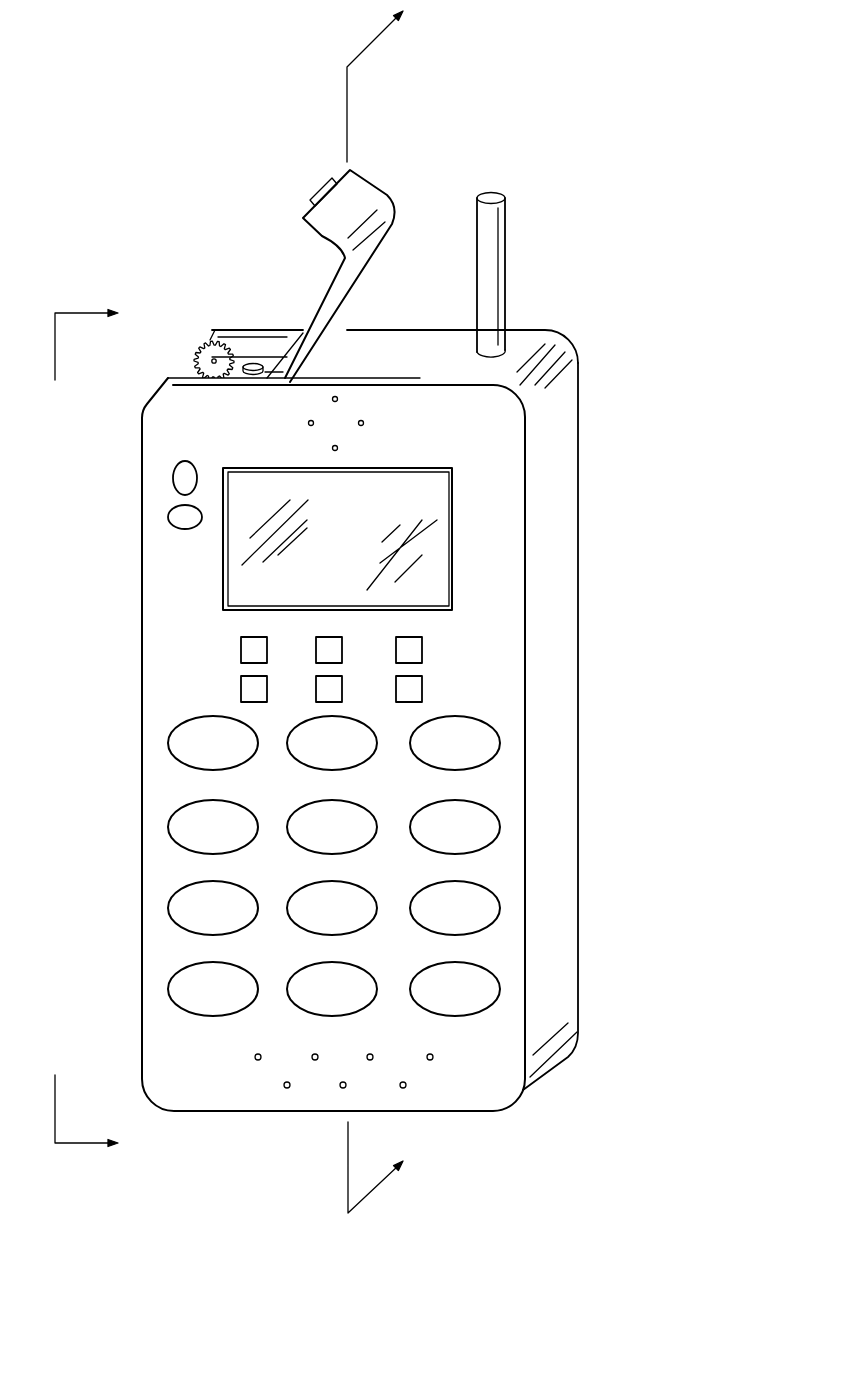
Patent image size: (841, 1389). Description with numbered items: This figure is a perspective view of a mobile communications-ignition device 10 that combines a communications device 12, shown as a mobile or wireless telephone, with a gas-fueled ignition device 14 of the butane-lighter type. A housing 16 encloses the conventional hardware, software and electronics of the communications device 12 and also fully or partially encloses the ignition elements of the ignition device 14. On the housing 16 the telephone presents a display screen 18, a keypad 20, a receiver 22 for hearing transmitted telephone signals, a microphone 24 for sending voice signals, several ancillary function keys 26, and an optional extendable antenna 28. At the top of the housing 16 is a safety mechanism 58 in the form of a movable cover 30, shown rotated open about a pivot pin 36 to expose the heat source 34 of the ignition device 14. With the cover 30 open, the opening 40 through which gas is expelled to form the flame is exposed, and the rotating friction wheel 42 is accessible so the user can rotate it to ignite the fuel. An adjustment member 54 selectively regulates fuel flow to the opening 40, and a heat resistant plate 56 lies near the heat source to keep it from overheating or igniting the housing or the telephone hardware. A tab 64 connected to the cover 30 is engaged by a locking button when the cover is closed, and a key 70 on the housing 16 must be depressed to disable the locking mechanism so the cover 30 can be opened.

The mobile communications-ignition device 10 is at (615, 310).
The communications device 12 is at (578, 700).
The ignition device 14 is at (188, 336).
The housing 16 is at (560, 507).
The display screen 18 is at (430, 477).
The keypad 20 is at (495, 786).
The receiver 22 is at (370, 423).
The microphone 24 is at (317, 1092).
The ancillary function keys 26 is at (248, 688).
The antenna 28 is at (492, 262).
The movable cover 30 is at (373, 193).
The heat source 34 is at (240, 389).
The pivot pin 36 is at (350, 329).
The opening 40 is at (245, 360).
The rotating friction wheel 42 is at (210, 337).
The adjustment member 54 is at (176, 478).
The heat resistant plate 56 is at (273, 360).
The safety mechanism 58 is at (384, 146).
The tab 64 is at (323, 183).
The key 70 is at (172, 522).